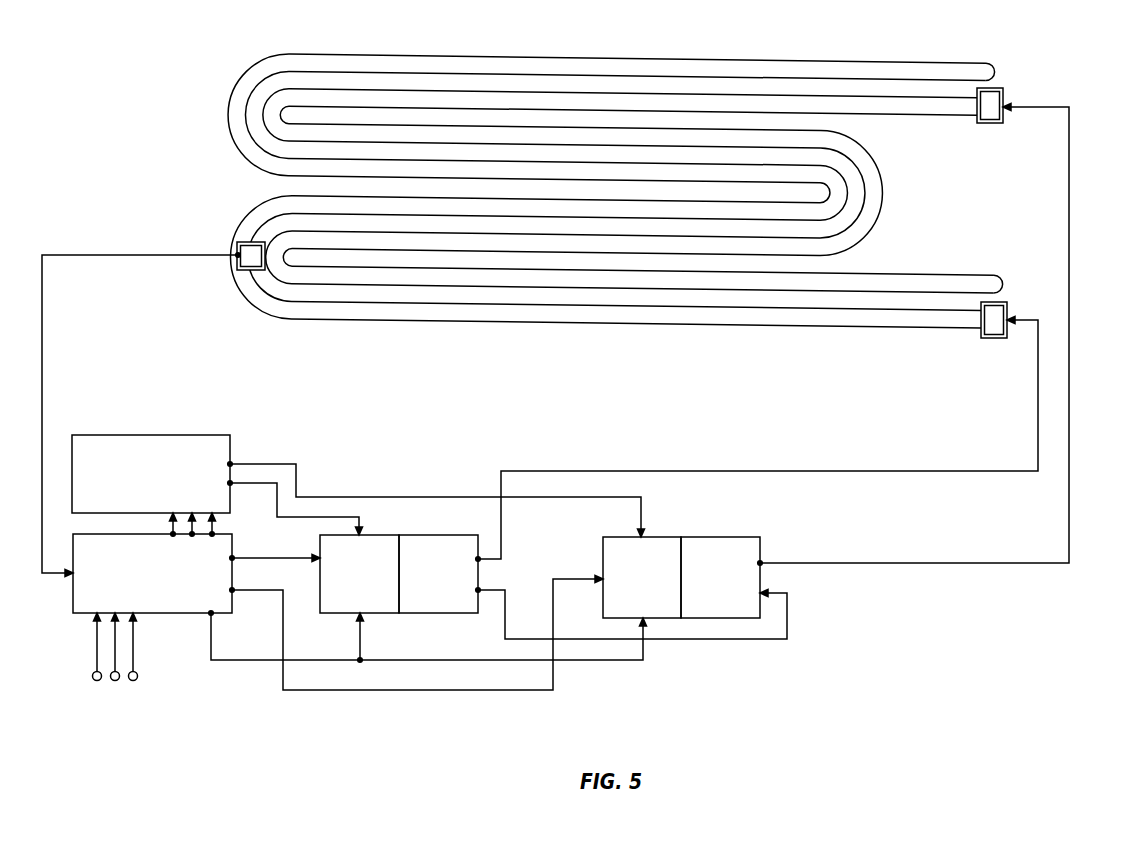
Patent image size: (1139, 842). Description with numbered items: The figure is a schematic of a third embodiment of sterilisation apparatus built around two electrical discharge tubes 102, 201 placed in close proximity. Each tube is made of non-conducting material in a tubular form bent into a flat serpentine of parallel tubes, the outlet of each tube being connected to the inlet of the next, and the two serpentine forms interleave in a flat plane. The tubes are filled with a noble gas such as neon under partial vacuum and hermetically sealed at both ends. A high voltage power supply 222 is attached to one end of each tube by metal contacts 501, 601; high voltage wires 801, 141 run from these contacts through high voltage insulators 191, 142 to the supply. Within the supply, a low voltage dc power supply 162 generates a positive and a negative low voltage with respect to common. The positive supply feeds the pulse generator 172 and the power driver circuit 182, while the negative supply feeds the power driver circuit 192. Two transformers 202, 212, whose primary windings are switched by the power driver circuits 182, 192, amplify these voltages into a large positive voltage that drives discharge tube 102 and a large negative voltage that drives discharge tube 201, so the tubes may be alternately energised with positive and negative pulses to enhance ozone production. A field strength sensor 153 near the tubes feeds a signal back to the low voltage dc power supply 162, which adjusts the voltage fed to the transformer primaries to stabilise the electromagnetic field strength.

The electrical discharge tube 102 is at (615, 164).
The electrical discharge tube 201 is at (602, 77).
The metal contact 601 is at (992, 102).
The high voltage insulator 142 is at (1006, 114).
The high voltage wire 801 is at (1072, 137).
The field strength sensor 153 is at (237, 252).
The metal contact 501 is at (972, 365).
The high voltage insulator 191 is at (993, 333).
The high voltage wire 141 is at (1037, 430).
The pulse generator 172 is at (165, 463).
The low voltage dc power supply 162 is at (150, 602).
The power driver circuit 182 is at (387, 555).
The transformer 202 is at (443, 602).
The power driver circuit 192 is at (657, 600).
The transformer 212 is at (727, 548).
The high voltage power supply 222 is at (420, 463).